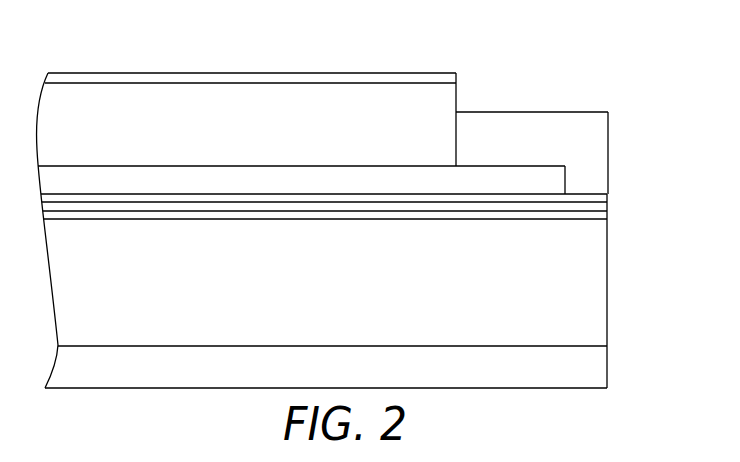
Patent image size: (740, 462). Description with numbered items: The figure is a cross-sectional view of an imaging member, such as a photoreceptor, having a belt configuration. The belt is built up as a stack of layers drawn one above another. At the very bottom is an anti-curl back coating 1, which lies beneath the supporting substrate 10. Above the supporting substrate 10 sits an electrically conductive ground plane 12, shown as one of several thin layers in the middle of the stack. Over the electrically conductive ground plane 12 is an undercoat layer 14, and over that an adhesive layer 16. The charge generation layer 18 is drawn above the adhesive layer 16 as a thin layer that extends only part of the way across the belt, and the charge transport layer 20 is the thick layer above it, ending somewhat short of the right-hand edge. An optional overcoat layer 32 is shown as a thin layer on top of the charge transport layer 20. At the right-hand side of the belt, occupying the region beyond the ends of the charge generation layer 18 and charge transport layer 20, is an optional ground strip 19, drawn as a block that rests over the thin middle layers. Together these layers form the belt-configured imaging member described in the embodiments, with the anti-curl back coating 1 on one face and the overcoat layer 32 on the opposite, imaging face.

The anti-curl back coating 1 is at (594, 372).
The supporting substrate 10 is at (593, 281).
The electrically conductive ground plane 12 is at (607, 219).
The undercoat layer 14 is at (607, 205).
The adhesive layer 16 is at (608, 196).
The charge generation layer 18 is at (541, 177).
The ground strip 19 is at (581, 120).
The charge transport layer 20 is at (451, 104).
The overcoat layer 32 is at (457, 76).